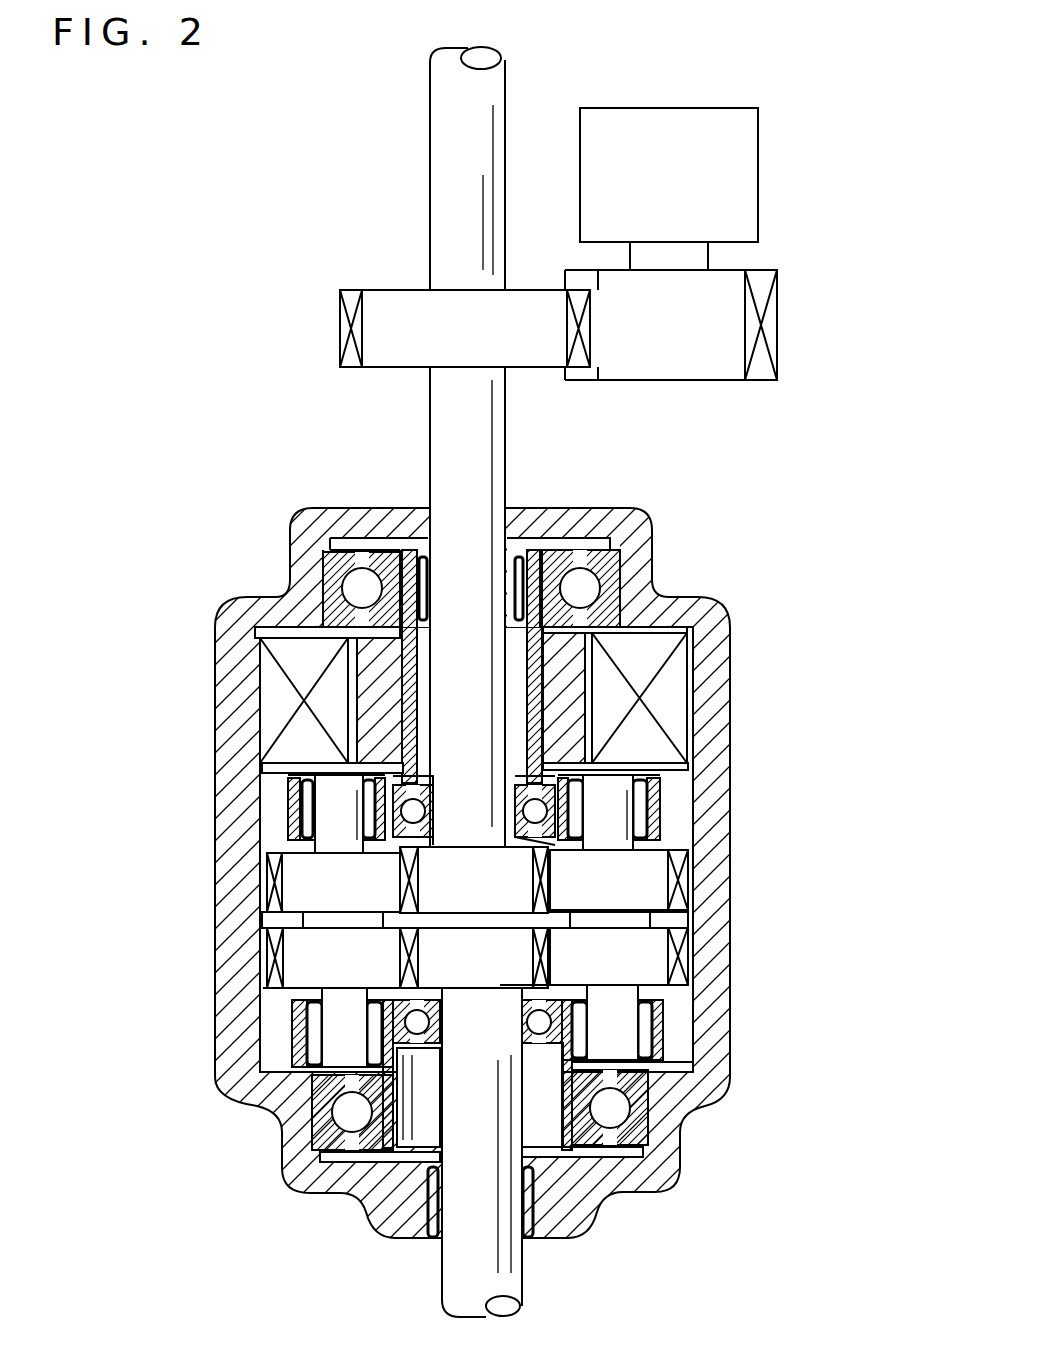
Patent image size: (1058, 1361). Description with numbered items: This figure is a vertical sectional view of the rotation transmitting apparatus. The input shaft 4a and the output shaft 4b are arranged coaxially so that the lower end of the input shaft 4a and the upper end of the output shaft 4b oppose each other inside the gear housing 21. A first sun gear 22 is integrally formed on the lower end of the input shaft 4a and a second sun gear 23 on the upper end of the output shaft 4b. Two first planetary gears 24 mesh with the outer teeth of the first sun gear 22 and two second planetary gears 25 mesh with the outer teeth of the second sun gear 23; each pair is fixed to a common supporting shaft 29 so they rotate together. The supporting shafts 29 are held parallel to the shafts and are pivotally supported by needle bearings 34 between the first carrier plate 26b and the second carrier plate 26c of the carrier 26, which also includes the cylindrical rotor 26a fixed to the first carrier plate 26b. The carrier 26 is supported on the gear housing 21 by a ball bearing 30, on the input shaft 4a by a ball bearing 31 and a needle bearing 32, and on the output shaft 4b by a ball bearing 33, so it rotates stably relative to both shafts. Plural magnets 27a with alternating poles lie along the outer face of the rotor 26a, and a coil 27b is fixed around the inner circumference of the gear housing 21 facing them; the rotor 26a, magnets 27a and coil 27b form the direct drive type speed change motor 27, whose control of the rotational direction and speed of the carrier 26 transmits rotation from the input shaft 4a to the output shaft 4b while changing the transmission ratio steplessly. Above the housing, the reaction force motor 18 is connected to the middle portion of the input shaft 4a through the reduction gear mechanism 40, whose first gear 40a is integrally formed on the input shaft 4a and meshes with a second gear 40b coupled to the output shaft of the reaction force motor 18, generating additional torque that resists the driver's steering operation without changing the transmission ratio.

The input shaft 4a is at (428, 164).
The output shaft 4b is at (523, 1267).
The reaction force motor 18 is at (758, 157).
The gear housing 21 is at (345, 515).
The first sun gear 22 is at (512, 890).
The second sun gear 23 is at (473, 984).
The first planetary gears 24 is at (297, 880).
The second planetary gears 25 is at (297, 955).
The carrier 26 is at (620, 768).
The rotor 26a is at (545, 730).
The first carrier plate 26b is at (658, 795).
The second carrier plate 26c is at (660, 1045).
The speed change motor 27 is at (555, 637).
The magnets 27a is at (577, 663).
The coil 27b is at (673, 693).
The supporting shafts 29 is at (330, 812).
The ball bearing 30 is at (328, 573).
The ball bearing 31 is at (365, 792).
The needle bearing 32 is at (412, 556).
The ball bearing 33 is at (370, 1030).
The needle bearings 34 is at (298, 790).
The reduction gear mechanism 40 is at (558, 382).
The first gear 40a is at (537, 355).
The second gear 40b is at (671, 357).